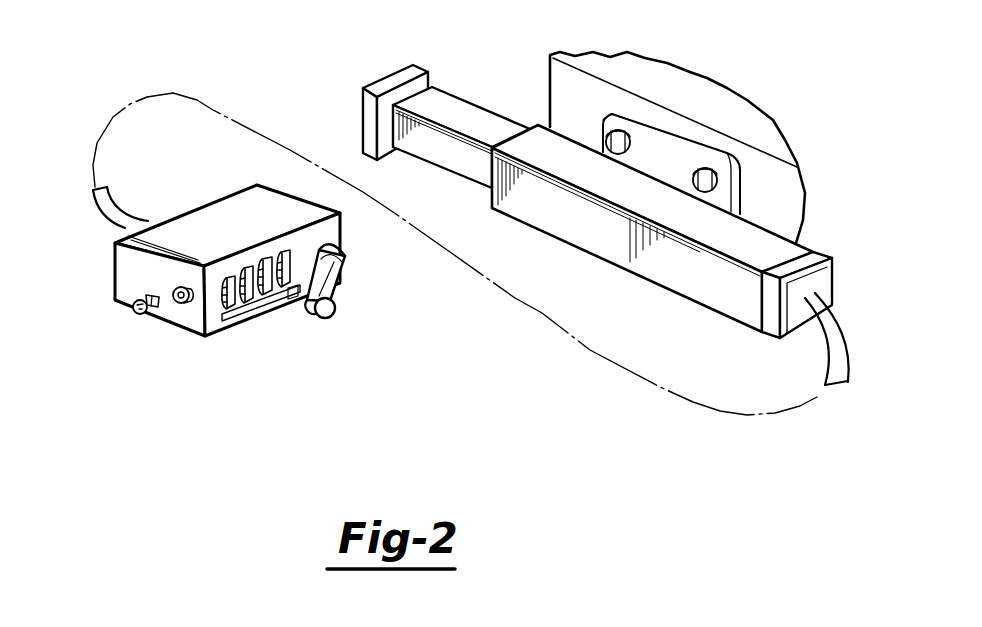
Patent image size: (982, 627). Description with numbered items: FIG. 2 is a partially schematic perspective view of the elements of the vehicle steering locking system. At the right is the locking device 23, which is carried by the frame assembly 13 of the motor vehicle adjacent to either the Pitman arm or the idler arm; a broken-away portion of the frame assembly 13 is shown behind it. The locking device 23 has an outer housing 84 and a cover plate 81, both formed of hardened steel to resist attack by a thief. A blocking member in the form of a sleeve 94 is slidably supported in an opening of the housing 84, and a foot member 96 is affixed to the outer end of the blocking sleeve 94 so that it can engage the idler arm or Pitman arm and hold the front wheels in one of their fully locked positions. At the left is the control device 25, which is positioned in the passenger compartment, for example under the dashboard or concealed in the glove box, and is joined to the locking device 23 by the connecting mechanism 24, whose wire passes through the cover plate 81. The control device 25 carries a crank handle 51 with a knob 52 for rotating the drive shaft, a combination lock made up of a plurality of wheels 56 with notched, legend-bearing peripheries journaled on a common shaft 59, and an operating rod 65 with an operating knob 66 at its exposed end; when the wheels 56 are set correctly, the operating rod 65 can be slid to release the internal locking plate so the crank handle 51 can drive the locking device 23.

The frame assembly 13 is at (683, 84).
The locking device 23 is at (778, 207).
The connecting mechanism 24 is at (848, 384).
The control device 25 is at (255, 258).
The crank handle 51 is at (338, 283).
The knob 52 is at (329, 313).
The wheels 56 is at (222, 278).
The common shaft 59 is at (196, 299).
The operating rod 65 is at (159, 307).
The operating knob 66 is at (140, 316).
The cover plate 81 is at (808, 262).
The outer housing 84 is at (590, 233).
The blocking sleeve 94 is at (462, 115).
The foot member 96 is at (417, 70).